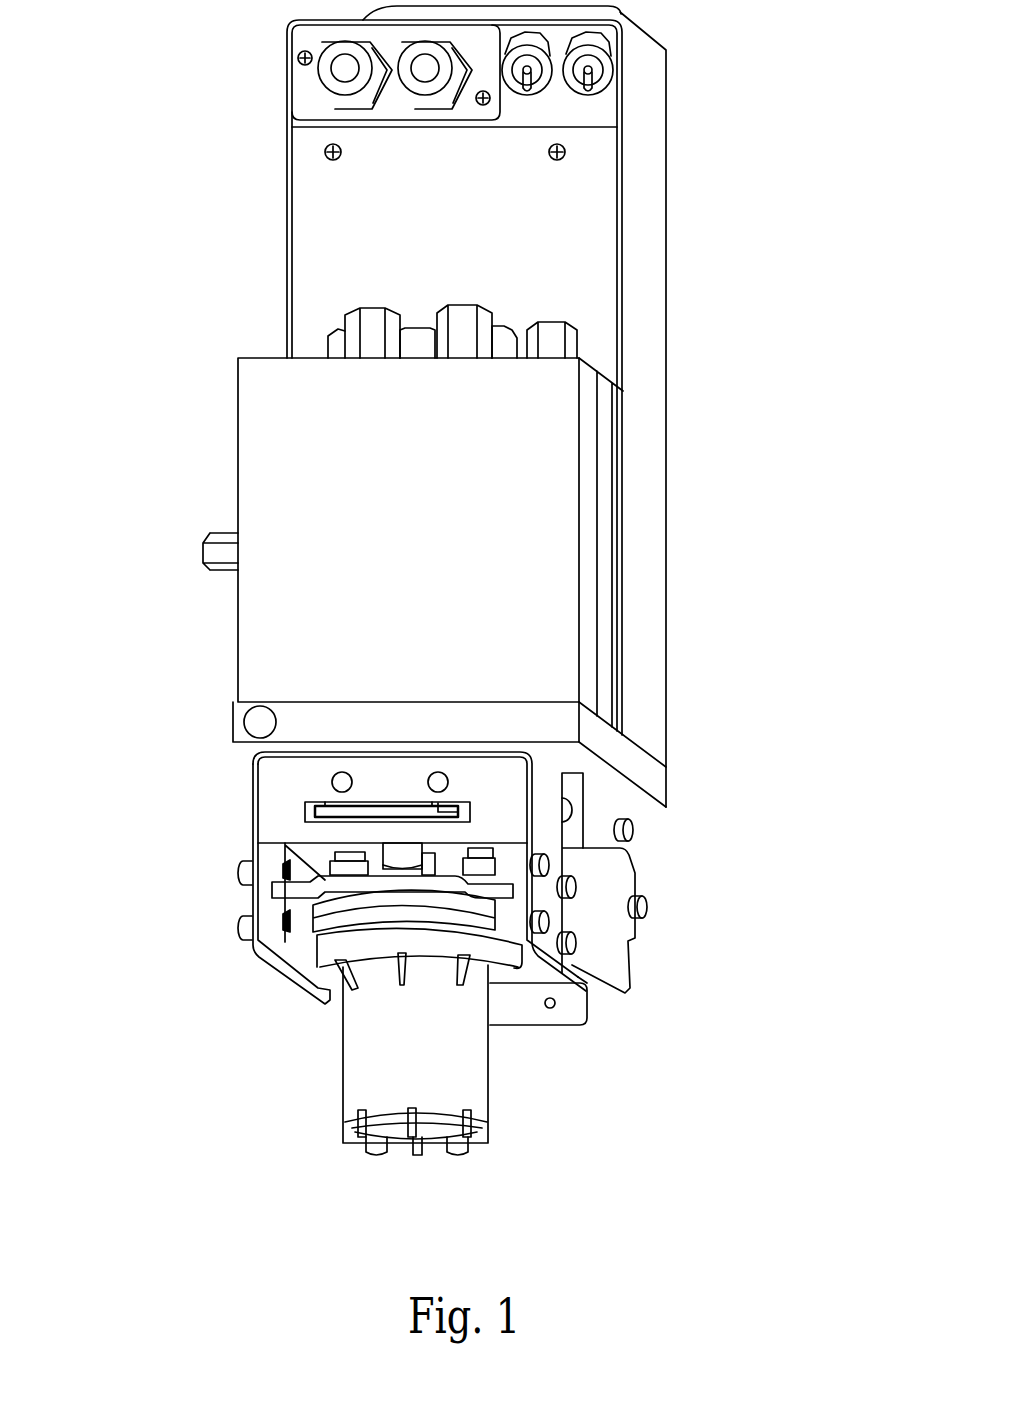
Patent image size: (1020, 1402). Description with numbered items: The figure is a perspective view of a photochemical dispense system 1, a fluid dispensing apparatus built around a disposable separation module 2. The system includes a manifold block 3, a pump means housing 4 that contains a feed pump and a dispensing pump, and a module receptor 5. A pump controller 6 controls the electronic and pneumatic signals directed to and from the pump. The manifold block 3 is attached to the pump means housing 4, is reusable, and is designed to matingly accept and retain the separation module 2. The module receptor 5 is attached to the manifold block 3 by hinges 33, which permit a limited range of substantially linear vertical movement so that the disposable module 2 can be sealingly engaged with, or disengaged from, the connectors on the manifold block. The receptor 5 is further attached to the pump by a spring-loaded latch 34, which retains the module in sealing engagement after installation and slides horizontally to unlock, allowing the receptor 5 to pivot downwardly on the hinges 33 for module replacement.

The photochemical dispense system 1 is at (706, 448).
The disposable separation module 2 is at (478, 1063).
The manifold block 3 is at (666, 785).
The pump means housing 4 is at (236, 437).
The module receptor 5 is at (253, 820).
The pump controller 6 is at (666, 225).
The hinges 33 is at (648, 909).
The spring-loaded latch 34 is at (310, 800).